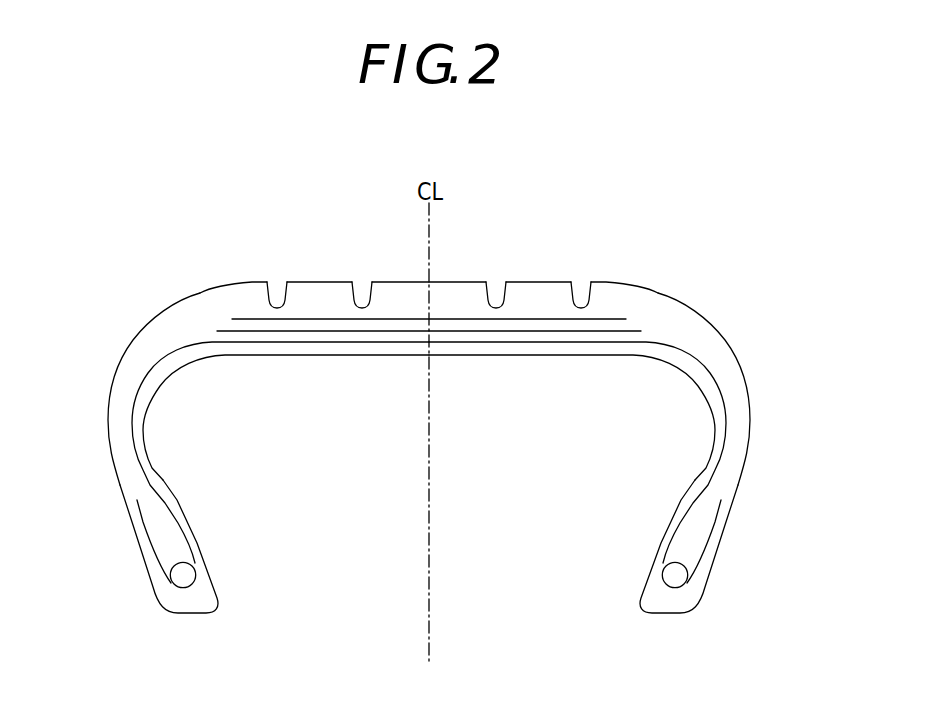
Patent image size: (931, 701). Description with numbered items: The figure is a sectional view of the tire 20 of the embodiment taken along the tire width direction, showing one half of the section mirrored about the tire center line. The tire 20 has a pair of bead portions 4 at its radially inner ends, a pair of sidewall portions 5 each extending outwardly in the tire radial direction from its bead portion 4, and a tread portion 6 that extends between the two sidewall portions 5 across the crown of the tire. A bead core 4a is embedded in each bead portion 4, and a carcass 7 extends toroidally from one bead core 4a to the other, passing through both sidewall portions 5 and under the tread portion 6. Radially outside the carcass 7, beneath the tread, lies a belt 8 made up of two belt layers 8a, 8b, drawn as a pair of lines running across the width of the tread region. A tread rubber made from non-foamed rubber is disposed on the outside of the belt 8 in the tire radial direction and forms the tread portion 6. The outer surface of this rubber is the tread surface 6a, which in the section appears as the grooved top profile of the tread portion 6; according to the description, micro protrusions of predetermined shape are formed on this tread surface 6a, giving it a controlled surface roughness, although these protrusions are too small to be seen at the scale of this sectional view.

The tire 20 is at (659, 286).
The tread portion 6 is at (540, 288).
The tread surface 6a is at (563, 283).
The sidewall portion 5 is at (110, 382).
The bead portion 4 is at (162, 609).
The bead core 4a is at (182, 579).
The carcass 7 is at (180, 520).
The belt 8 is at (240, 230).
The belt layer 8a is at (250, 319).
The belt layer 8b is at (222, 331).